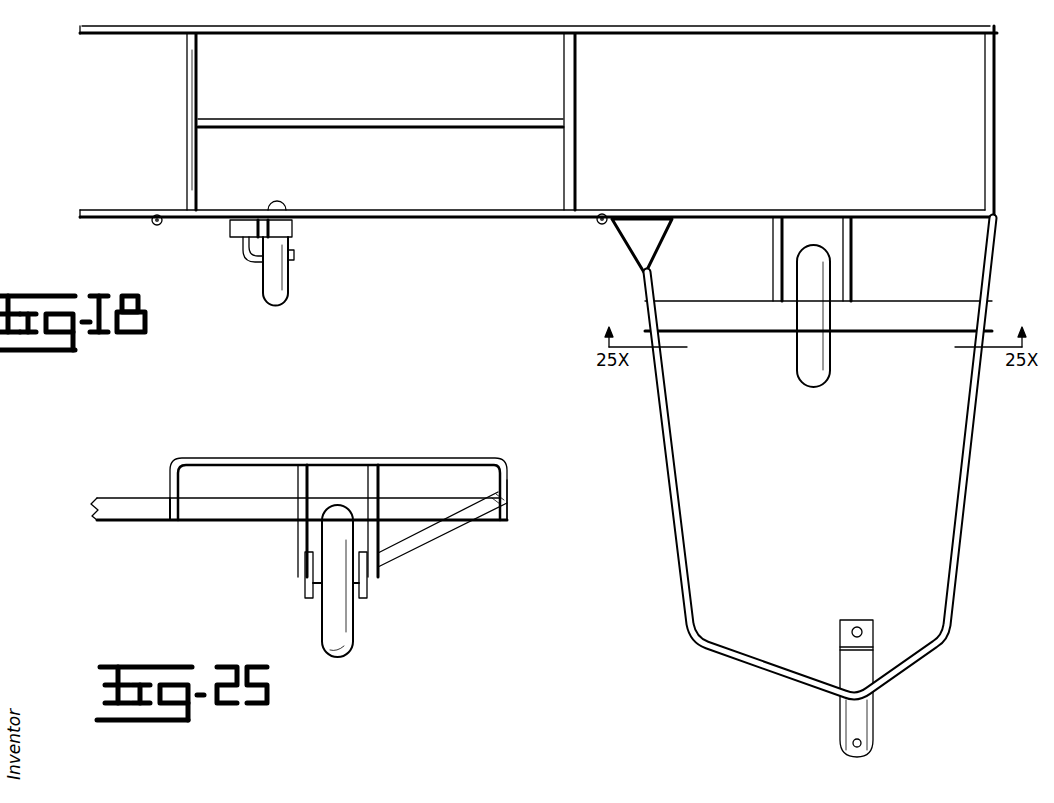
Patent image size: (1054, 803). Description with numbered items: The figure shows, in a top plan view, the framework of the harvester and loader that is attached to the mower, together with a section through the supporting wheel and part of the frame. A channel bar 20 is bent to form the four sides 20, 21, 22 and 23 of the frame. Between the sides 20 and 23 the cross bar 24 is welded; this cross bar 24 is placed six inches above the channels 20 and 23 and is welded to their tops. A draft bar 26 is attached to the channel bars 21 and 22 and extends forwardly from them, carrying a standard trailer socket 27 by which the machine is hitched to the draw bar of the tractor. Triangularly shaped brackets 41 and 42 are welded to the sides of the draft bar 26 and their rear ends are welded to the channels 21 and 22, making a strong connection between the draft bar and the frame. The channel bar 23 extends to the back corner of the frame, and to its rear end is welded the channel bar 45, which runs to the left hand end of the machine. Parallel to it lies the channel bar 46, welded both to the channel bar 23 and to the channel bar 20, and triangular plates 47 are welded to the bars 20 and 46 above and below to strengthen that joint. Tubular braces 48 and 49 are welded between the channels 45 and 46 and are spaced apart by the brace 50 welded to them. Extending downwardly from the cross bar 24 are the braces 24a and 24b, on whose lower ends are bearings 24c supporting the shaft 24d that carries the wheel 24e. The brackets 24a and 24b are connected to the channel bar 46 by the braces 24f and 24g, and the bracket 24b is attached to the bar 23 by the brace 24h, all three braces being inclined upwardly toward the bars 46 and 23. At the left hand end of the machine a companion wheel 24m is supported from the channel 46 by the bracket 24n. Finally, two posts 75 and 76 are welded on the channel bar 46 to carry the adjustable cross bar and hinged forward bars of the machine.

In FIG. 18, the channel bar 20 is at (672, 420).
In FIG. 25, the channel bar 20 is at (172, 522).
In FIG. 18, the channel bar side 21 is at (732, 665).
In FIG. 18, the channel bar side 22 is at (915, 668).
In FIG. 18, the channel bar side 23 is at (1000, 122).
In FIG. 25, the channel bar side 23 is at (508, 512).
In FIG. 18, the cross bar 24 is at (912, 325).
In FIG. 25, the cross bar 24 is at (445, 456).
In FIG. 25, the brace 24a is at (305, 470).
In FIG. 25, the brace 24b is at (380, 487).
In FIG. 25, the bearings 24c is at (303, 585).
In FIG. 25, the shaft 24d is at (356, 582).
In FIG. 18, the wheel 24e is at (802, 375).
In FIG. 25, the wheel 24e is at (355, 628).
In FIG. 18, the brace 24f is at (773, 270).
In FIG. 18, the brace 24g is at (852, 243).
In FIG. 25, the brace 24h is at (440, 540).
In FIG. 18, the companion wheel 24m is at (290, 278).
In FIG. 18, the bracket 24n is at (240, 240).
In FIG. 18, the draft bar 26 is at (853, 720).
In FIG. 18, the trailer socket 27 is at (853, 743).
In FIG. 18, the triangularly shaped bracket 41 is at (875, 705).
In FIG. 18, the triangularly shaped bracket 42 is at (838, 706).
In FIG. 18, the channel bar 45 is at (731, 27).
In FIG. 18, the channel bar 46 is at (738, 210).
In FIG. 25, the channel bar 46 is at (265, 512).
In FIG. 18, the triangular plates 47 is at (637, 236).
In FIG. 18, the tubular brace 48 is at (198, 93).
In FIG. 18, the tubular brace 49 is at (578, 93).
In FIG. 18, the brace 50 is at (372, 118).
In FIG. 18, the post 75 is at (159, 225).
In FIG. 18, the post 76 is at (598, 223).